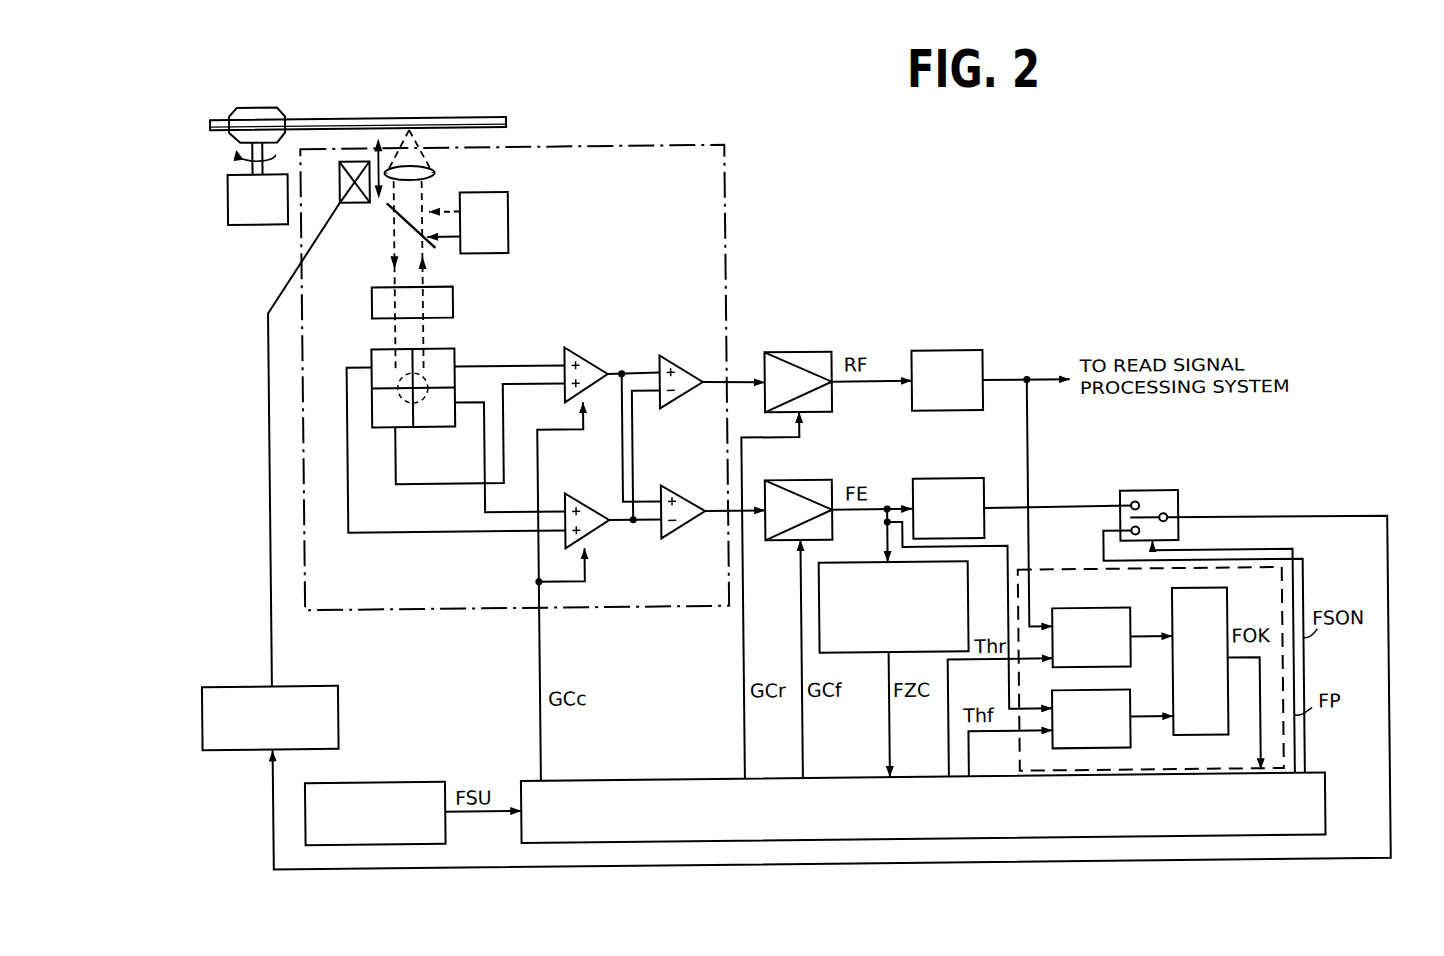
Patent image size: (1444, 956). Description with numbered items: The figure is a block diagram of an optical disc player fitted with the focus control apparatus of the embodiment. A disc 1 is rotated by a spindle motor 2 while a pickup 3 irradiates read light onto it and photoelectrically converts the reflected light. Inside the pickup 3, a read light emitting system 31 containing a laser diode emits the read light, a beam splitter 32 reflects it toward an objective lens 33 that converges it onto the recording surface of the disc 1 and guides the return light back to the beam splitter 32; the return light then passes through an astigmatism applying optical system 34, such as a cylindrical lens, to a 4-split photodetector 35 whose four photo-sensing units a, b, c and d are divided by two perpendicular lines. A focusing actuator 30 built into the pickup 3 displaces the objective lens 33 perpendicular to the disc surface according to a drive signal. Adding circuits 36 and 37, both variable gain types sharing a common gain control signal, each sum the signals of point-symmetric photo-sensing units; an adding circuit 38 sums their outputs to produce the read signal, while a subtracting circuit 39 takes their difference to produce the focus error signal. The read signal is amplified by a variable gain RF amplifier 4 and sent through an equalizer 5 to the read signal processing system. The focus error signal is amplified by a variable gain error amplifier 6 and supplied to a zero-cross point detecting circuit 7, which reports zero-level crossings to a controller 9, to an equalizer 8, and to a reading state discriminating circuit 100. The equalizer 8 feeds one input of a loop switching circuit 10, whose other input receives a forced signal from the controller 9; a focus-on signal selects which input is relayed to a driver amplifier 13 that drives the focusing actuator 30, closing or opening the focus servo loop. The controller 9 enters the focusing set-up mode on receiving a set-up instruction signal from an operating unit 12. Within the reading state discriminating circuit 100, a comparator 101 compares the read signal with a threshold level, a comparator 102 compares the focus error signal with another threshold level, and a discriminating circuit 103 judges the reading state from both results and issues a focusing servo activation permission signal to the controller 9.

The disc 1 is at (510, 118).
The spindle motor 2 is at (249, 219).
The pickup 3 is at (736, 171).
The RF amplifier 4 is at (813, 352).
The equalizer 5 is at (961, 352).
The error amplifier 6 is at (820, 480).
The zero-cross point detecting circuit 7 is at (870, 653).
The equalizer 8 is at (965, 480).
The controller 9 is at (644, 778).
The loop switching circuit 10 is at (1160, 494).
The operating unit 12 is at (406, 778).
The driver amplifier 13 is at (336, 702).
The focusing actuator 30 is at (343, 173).
The read light emitting system 31 is at (511, 213).
The beam splitter 32 is at (393, 205).
The objective lens 33 is at (438, 170).
The astigmatism applying optical system 34 is at (455, 298).
The 4-split photodetector 35 is at (463, 343).
The adding circuit 36 is at (597, 357).
The adding circuit 37 is at (588, 500).
The adding circuit 38 is at (681, 362).
The subtracting circuit 39 is at (688, 494).
The reading state discriminating circuit 100 is at (1044, 568).
The comparator 101 is at (1080, 611).
The comparator 102 is at (1128, 737).
The discriminating circuit 103 is at (1250, 603).